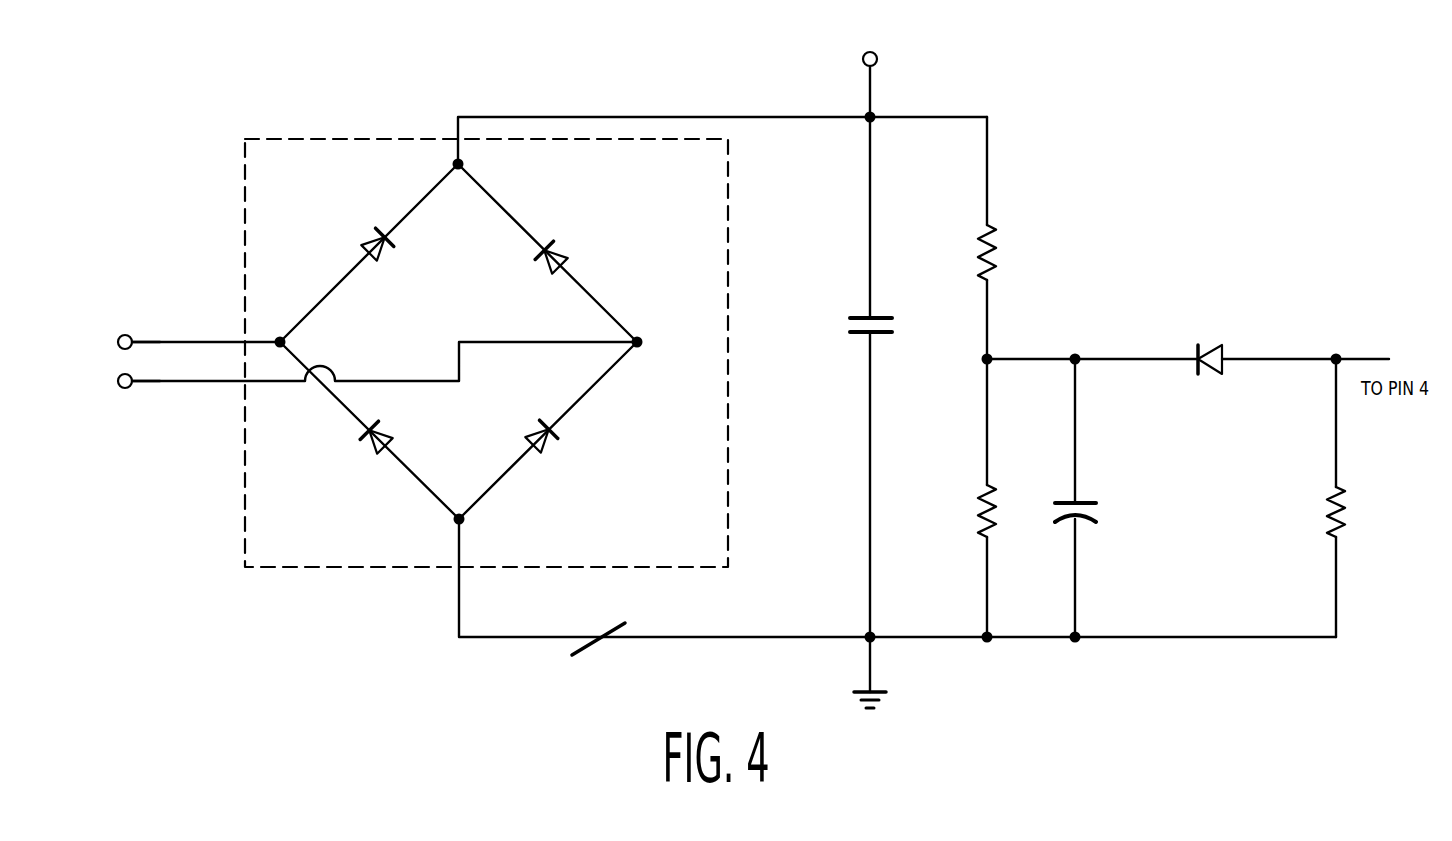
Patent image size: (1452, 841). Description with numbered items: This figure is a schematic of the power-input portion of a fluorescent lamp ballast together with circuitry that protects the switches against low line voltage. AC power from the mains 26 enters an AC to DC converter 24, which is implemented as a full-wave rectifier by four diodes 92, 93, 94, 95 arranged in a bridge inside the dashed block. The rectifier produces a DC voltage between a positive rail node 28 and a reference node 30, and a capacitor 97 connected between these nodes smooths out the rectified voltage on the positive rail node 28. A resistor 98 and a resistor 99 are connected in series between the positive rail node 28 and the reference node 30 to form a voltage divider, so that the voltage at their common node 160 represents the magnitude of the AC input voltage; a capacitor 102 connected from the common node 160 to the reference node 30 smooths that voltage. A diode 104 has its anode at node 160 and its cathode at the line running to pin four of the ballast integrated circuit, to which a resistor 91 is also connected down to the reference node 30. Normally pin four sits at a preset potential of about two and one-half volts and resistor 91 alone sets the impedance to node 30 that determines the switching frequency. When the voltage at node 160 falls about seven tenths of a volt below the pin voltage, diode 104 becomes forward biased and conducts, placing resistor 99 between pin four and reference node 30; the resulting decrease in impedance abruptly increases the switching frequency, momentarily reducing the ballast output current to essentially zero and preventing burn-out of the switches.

The AC to DC converter 24 is at (365, 138).
The mains 26 is at (197, 343).
The positive rail node 28 is at (878, 56).
The reference node 30 is at (872, 680).
The diode 92 is at (374, 237).
The diode 93 is at (565, 258).
The diode 94 is at (549, 441).
The diode 95 is at (369, 442).
The capacitor 97 is at (858, 334).
The resistor 98 is at (993, 263).
The resistor 99 is at (980, 525).
The common node 160 is at (993, 353).
The capacitor 102 is at (1099, 509).
The diode 104 is at (1211, 350).
The resistor 91 is at (1346, 524).